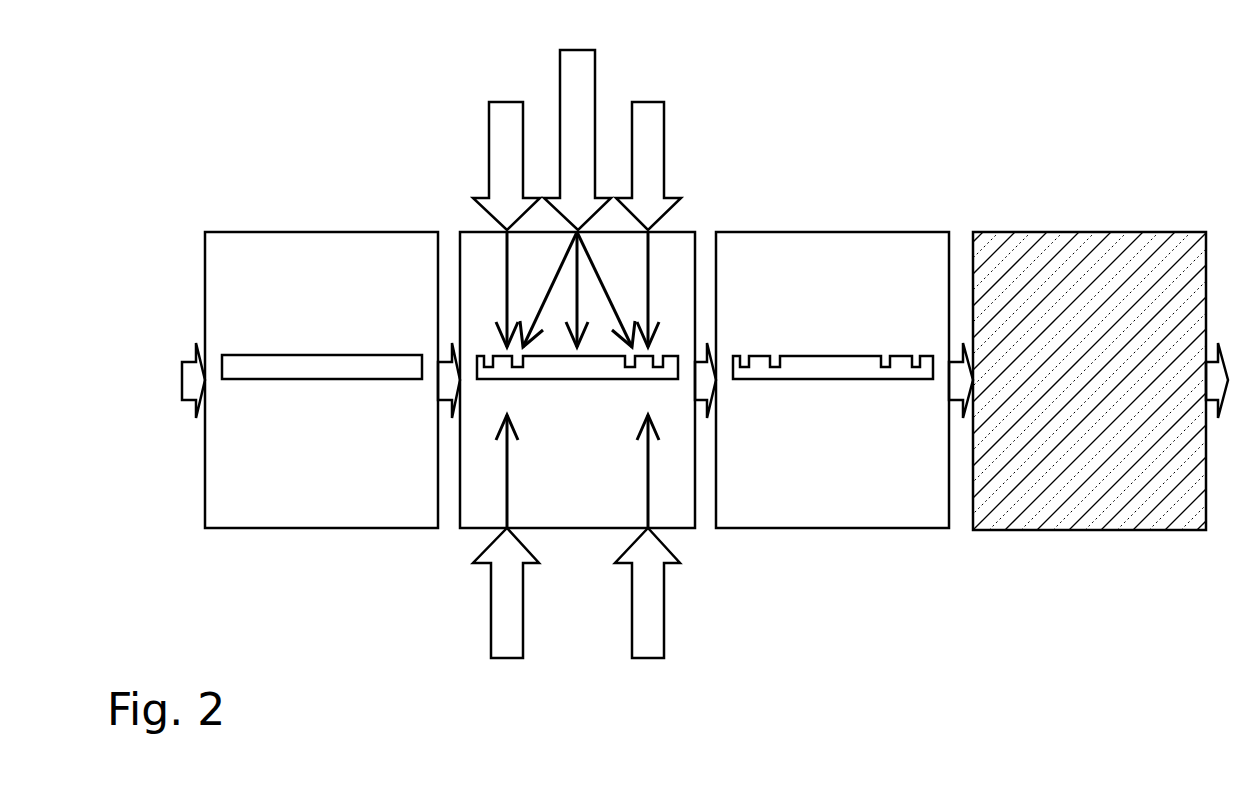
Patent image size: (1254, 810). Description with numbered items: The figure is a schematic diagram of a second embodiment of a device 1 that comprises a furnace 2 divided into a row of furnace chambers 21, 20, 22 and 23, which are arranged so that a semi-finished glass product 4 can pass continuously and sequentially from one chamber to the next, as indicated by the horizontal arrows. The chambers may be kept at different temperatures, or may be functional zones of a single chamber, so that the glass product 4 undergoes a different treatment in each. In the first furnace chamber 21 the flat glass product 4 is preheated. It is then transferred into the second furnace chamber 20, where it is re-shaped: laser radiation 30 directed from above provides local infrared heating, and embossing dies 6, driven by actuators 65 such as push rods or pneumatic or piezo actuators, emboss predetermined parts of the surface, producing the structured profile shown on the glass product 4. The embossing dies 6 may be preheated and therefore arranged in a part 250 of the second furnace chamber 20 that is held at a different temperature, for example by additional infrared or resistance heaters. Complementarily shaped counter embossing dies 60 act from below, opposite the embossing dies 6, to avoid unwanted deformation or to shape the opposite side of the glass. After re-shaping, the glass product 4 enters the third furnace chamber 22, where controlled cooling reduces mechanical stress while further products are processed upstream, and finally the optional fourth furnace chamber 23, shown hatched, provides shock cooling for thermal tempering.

The device 1 is at (1000, 106).
The furnace 2 is at (283, 572).
The semi-finished glass product 4 is at (321, 367).
The embossing dies 6 is at (657, 248).
The second furnace chamber 20 is at (590, 514).
The first furnace chamber 21 is at (335, 514).
The third furnace chamber 22 is at (848, 514).
The fourth furnace chamber 23 is at (1100, 515).
The laser radiation 30 is at (583, 67).
The actuators 65 is at (657, 130).
The part of the furnace chamber 250 is at (478, 495).
The counter embossing dies 60 is at (650, 505).